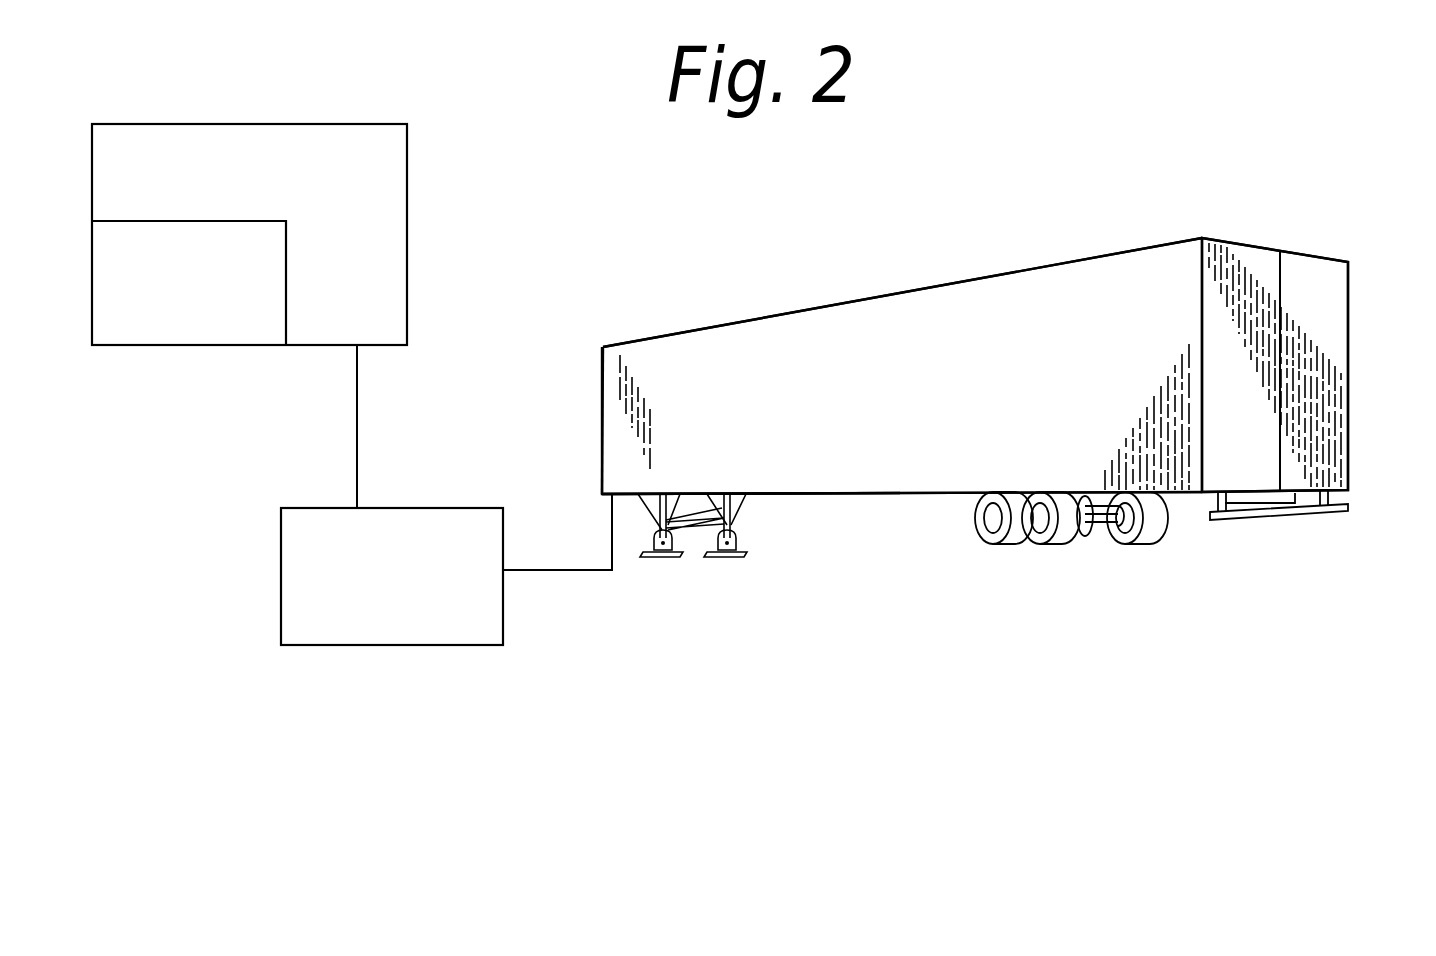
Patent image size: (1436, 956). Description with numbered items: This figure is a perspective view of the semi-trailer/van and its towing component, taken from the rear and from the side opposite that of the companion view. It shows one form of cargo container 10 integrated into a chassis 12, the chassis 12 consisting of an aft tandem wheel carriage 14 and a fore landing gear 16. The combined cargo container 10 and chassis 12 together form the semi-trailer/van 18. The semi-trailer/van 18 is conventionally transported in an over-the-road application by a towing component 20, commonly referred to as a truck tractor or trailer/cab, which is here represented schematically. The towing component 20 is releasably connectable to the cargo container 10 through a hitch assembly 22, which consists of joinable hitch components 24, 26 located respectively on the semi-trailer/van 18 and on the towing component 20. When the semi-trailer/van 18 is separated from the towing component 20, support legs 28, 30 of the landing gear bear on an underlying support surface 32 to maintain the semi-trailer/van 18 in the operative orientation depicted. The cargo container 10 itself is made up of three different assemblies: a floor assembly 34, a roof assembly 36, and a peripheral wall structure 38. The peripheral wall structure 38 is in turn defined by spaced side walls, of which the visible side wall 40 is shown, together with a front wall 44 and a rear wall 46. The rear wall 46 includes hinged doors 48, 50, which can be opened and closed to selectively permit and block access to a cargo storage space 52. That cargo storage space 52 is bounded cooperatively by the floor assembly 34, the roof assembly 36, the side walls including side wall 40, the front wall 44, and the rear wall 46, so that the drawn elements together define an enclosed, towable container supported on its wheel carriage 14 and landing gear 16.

The cargo container 10 is at (1228, 215).
The chassis 12 is at (897, 496).
The tandem wheel carriage 14 is at (1028, 551).
The landing gear 16 is at (684, 577).
The semi-trailer/van 18 is at (1101, 551).
The towing component 20 is at (310, 231).
The hitch assembly 22 is at (208, 473).
The hitch component 24 is at (378, 620).
The hitch component 26 is at (174, 322).
The support leg 28 is at (662, 557).
The support leg 30 is at (735, 557).
The support surface 32 is at (888, 680).
The floor assembly 34 is at (820, 496).
The roof assembly 36 is at (940, 284).
The peripheral wall structure 38 is at (1157, 335).
The side wall 40 is at (868, 413).
The front wall 44 is at (603, 410).
The rear wall 46 is at (1330, 413).
The hinged door 48 is at (1248, 460).
The hinged door 50 is at (1328, 338).
The cargo storage space 52 is at (1015, 348).